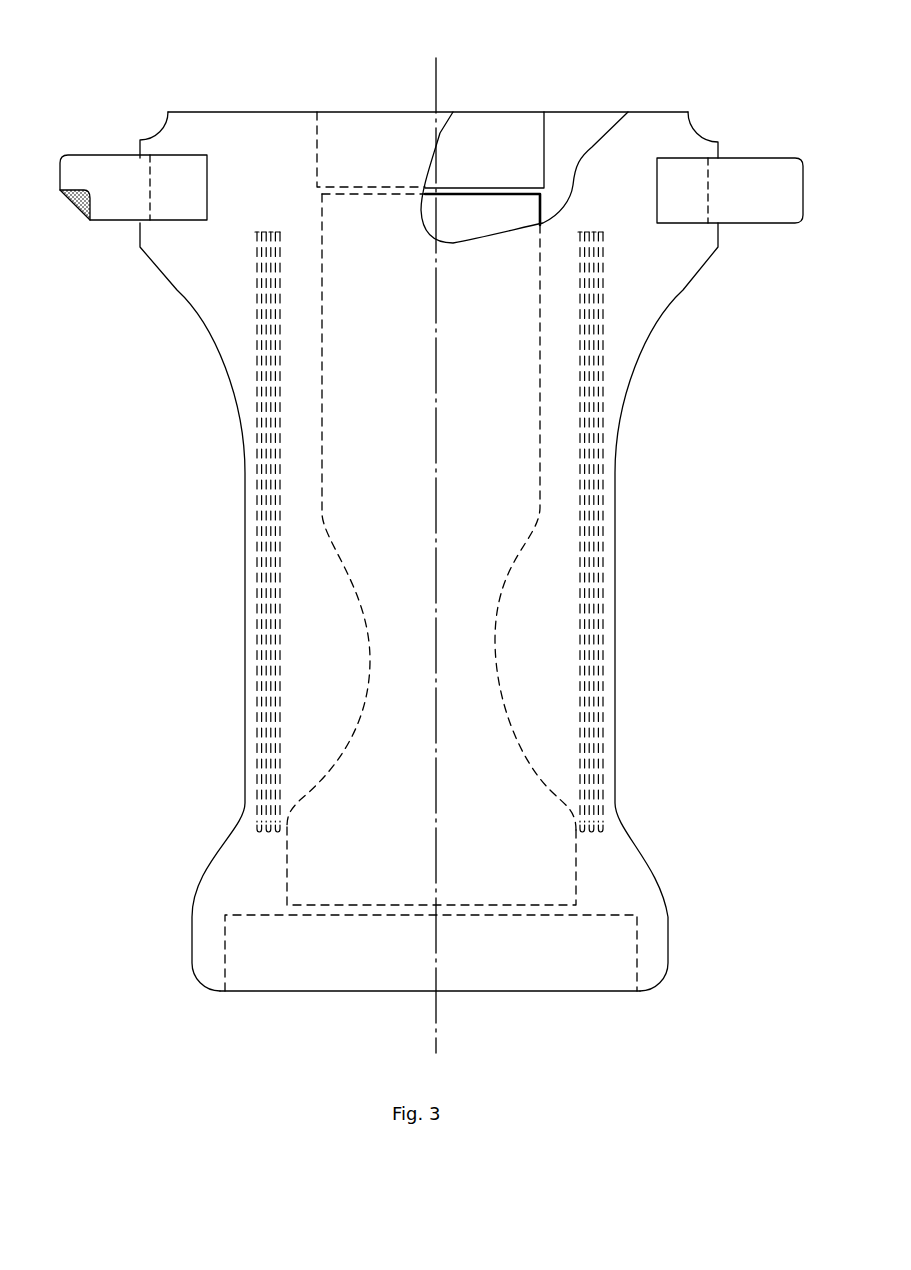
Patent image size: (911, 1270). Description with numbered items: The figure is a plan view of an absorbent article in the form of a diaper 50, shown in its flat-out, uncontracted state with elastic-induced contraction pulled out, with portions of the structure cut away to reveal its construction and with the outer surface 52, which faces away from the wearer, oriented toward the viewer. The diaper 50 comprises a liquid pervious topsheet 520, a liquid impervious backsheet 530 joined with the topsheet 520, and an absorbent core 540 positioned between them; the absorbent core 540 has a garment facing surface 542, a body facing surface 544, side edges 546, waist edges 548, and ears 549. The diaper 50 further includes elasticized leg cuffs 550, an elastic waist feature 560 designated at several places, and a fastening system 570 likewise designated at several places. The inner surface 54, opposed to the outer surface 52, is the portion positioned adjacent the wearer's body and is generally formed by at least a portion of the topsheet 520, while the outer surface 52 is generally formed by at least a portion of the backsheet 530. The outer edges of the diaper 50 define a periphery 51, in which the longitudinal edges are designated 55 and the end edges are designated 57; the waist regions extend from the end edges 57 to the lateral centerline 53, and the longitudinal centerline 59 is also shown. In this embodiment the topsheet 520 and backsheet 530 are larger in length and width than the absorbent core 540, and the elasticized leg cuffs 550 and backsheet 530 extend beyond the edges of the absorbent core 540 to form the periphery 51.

The diaper 50 is at (708, 82).
The periphery 51 is at (232, 388).
The outer surface 52 is at (470, 733).
The lateral centerline 53 is at (307, 578).
The inner surface 54 is at (505, 410).
The longitudinal edges 55 is at (615, 475).
The end edges 57 is at (275, 112).
The longitudinal centerline 59 is at (437, 1025).
The topsheet 520 is at (590, 130).
The backsheet 530 is at (657, 283).
The absorbent core 540 is at (500, 226).
The garment facing surface 542 is at (508, 202).
The body facing surface 544 is at (445, 212).
The side edges 546 is at (321, 478).
The waist edges 548 is at (350, 187).
The ears 549 is at (320, 868).
The elasticized leg cuffs 550 is at (597, 600).
The elastic waist feature 560 is at (412, 140).
The fastening system 570 is at (128, 187).